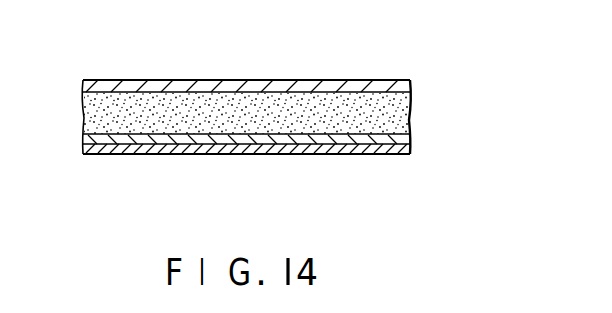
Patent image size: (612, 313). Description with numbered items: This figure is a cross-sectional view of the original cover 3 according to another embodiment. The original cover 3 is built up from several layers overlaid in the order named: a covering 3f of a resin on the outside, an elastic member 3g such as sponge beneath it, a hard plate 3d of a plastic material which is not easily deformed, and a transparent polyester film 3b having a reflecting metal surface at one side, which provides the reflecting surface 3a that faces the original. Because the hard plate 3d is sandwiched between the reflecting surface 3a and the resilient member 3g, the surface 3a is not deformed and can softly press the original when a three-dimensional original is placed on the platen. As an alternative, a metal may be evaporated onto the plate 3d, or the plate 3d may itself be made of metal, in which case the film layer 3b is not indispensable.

The original cover 3 is at (322, 70).
The covering 3f is at (393, 89).
The elastic member 3g is at (400, 108).
The hard plate 3d is at (405, 140).
The reflecting surface 3a is at (406, 150).
The transparent polyester film 3b is at (380, 154).